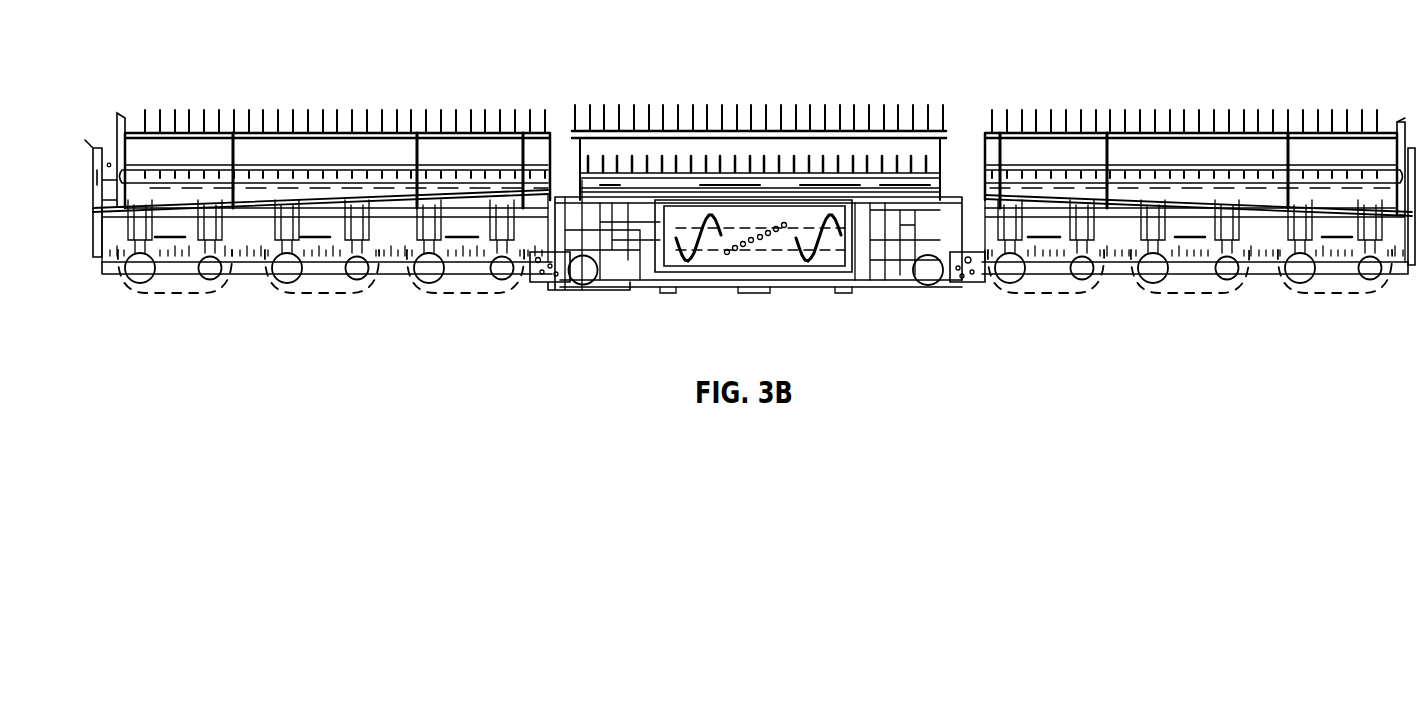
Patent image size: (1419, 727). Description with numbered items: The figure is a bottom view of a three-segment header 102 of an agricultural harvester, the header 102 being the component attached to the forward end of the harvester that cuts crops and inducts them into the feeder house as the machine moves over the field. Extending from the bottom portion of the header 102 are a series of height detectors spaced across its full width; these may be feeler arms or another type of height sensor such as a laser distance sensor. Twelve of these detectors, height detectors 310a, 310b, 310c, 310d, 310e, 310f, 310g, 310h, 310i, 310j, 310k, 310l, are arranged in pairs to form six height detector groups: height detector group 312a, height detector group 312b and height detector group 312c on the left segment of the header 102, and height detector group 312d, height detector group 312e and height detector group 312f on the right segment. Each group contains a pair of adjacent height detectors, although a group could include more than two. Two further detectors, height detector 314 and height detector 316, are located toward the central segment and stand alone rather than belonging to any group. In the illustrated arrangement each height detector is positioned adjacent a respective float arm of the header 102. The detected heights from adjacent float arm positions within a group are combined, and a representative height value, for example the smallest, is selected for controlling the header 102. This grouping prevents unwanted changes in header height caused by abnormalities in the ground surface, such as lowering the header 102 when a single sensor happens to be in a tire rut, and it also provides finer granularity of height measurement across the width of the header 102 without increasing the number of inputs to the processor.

The header 102 is at (97, 213).
The height detector 310a is at (141, 266).
The height detector 310b is at (211, 266).
The height detector 310c is at (288, 266).
The height detector 310d is at (358, 266).
The height detector 310e is at (430, 266).
The height detector 310f is at (503, 266).
The height detector 310g is at (1011, 266).
The height detector 310h is at (1083, 266).
The height detector 310i is at (1154, 266).
The height detector 310j is at (1228, 266).
The height detector 310k is at (1301, 266).
The height detector 310l is at (1371, 266).
The height detector group 312a is at (168, 236).
The height detector group 312b is at (314, 236).
The height detector group 312c is at (458, 236).
The height detector group 312d is at (1036, 236).
The height detector group 312e is at (1180, 236).
The height detector group 312f is at (1328, 236).
The height detector 314 is at (583, 268).
The height detector 316 is at (928, 268).